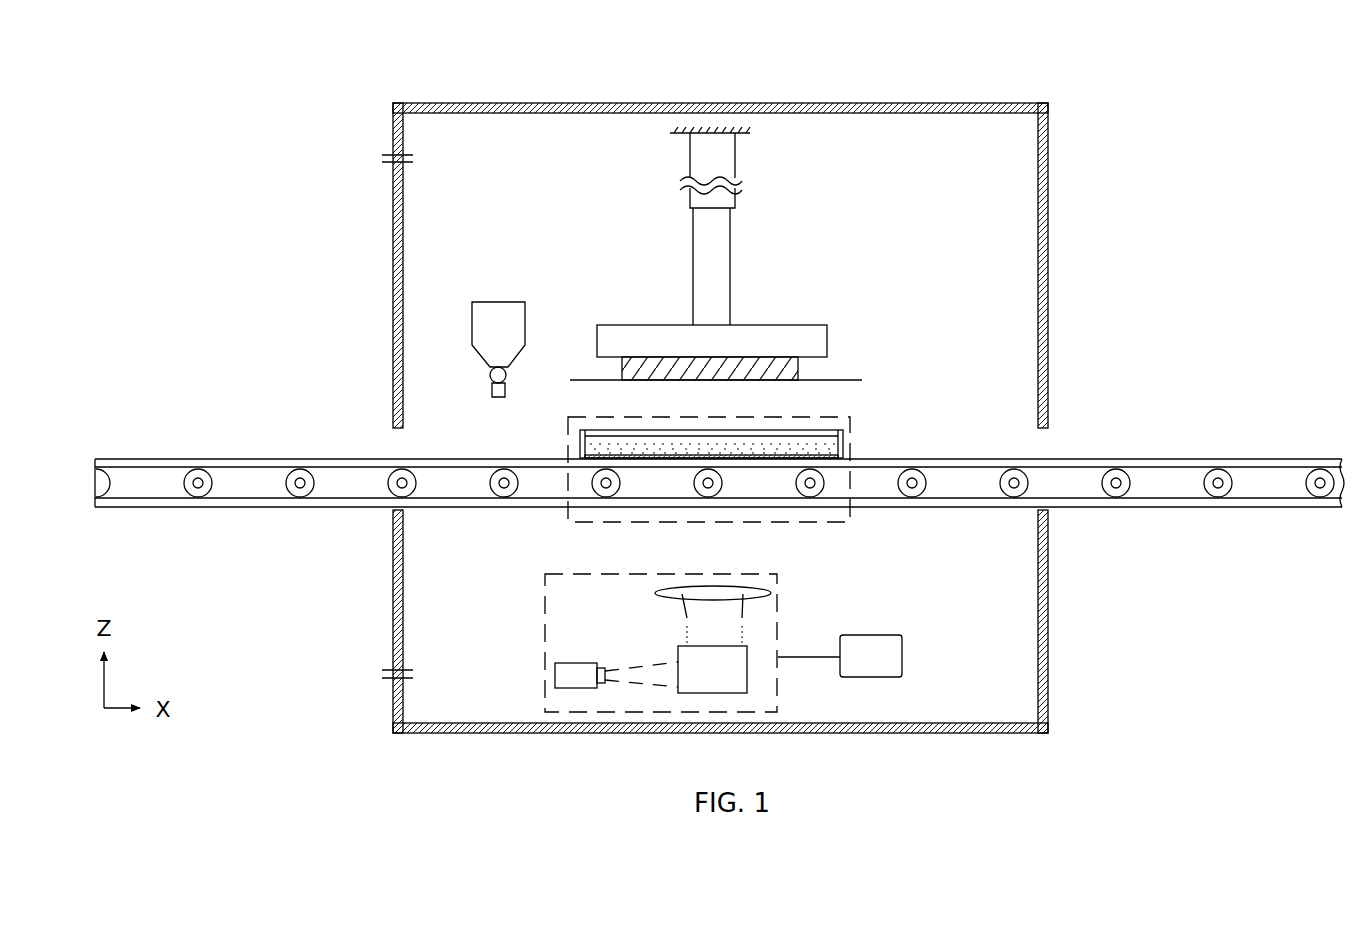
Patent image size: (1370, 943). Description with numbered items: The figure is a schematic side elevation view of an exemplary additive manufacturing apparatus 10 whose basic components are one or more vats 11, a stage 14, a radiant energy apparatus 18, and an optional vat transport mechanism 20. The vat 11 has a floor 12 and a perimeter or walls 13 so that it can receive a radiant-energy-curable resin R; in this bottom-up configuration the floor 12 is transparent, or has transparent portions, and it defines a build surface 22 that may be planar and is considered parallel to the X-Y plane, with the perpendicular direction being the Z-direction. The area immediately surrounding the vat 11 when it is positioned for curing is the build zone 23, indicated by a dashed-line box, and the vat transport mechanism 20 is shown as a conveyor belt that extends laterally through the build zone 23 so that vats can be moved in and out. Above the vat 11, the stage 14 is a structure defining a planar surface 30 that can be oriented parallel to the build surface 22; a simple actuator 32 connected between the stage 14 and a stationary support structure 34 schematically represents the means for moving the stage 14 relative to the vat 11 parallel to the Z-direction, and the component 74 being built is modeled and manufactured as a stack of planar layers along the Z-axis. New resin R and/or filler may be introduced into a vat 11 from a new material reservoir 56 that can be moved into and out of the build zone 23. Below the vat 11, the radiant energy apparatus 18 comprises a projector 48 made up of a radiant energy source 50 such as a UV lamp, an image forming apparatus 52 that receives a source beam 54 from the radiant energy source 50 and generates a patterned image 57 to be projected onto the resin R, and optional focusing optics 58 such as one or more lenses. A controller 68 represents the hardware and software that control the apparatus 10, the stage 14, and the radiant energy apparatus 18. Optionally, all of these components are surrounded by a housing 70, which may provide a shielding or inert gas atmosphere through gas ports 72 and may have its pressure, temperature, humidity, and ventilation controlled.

The apparatus 10 is at (905, 76).
The housing 70 is at (448, 114).
The gas ports 72 is at (406, 158).
The stationary support structure 34 is at (748, 134).
The actuator 32 is at (730, 241).
The stage 14 is at (802, 333).
The component 74 is at (618, 373).
The planar surface 30 is at (828, 378).
The new material reservoir 56 is at (498, 349).
The walls 13 is at (580, 431).
The resin R is at (661, 445).
The vat 11 is at (578, 437).
The build surface 22 is at (822, 452).
The floor 12 is at (657, 448).
The build zone 23 is at (838, 522).
The vat transport mechanism 20 is at (950, 500).
The radiant energy apparatus 18 is at (695, 644).
The projector 48 is at (778, 695).
The focusing optics 58 is at (658, 592).
The patterned image 57 is at (685, 617).
The image forming apparatus 52 is at (712, 669).
The source beam 54 is at (645, 665).
The radiant energy source 50 is at (564, 676).
The controller 68 is at (840, 656).